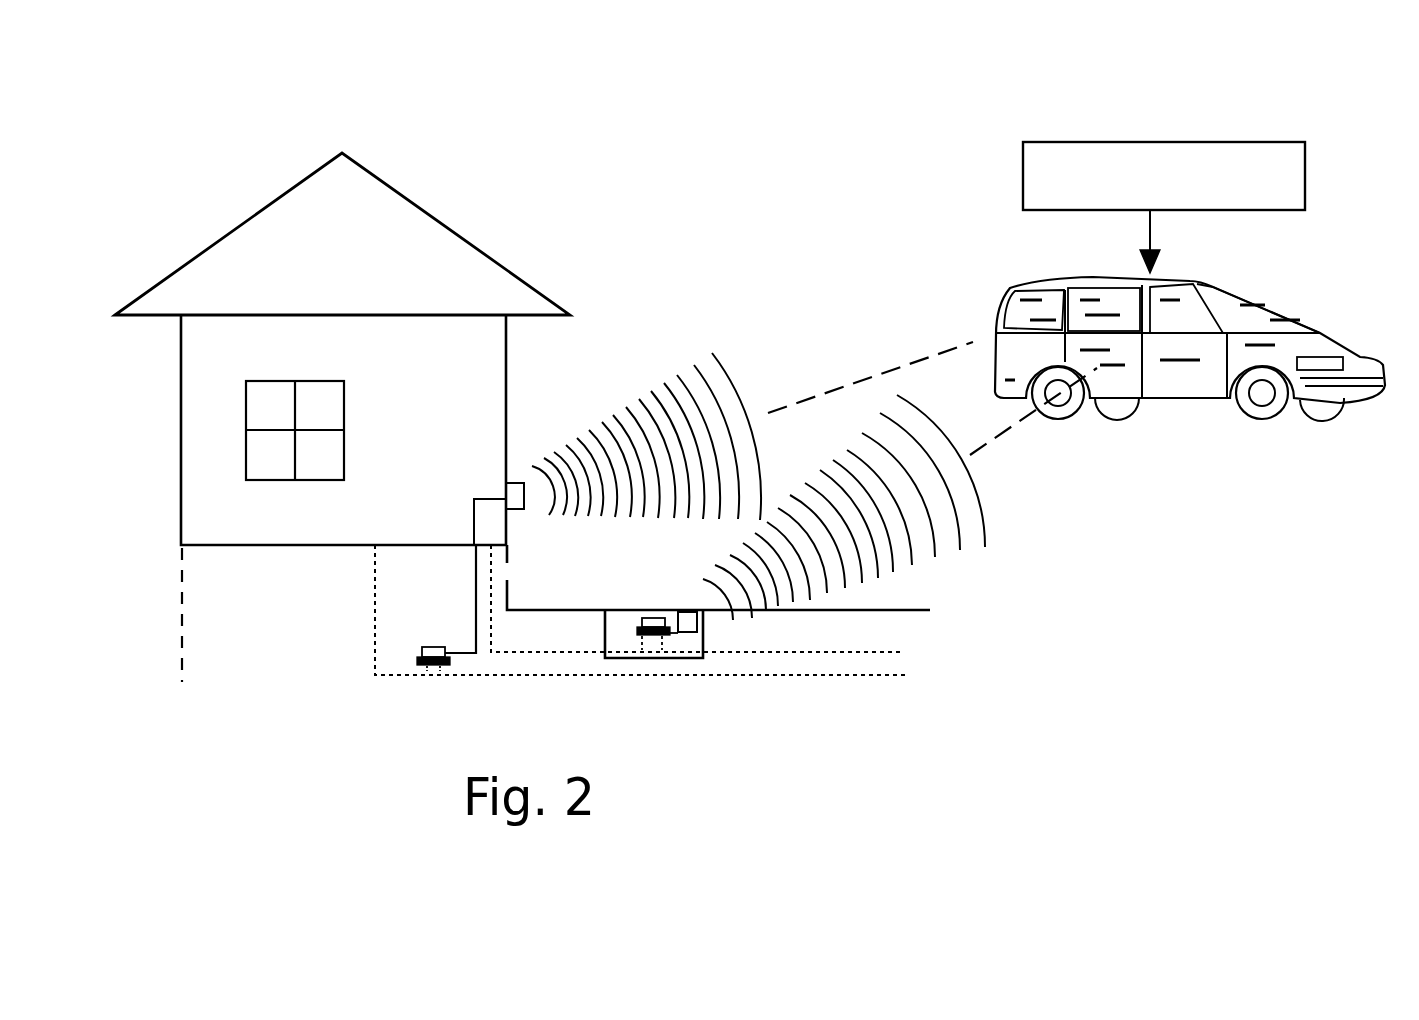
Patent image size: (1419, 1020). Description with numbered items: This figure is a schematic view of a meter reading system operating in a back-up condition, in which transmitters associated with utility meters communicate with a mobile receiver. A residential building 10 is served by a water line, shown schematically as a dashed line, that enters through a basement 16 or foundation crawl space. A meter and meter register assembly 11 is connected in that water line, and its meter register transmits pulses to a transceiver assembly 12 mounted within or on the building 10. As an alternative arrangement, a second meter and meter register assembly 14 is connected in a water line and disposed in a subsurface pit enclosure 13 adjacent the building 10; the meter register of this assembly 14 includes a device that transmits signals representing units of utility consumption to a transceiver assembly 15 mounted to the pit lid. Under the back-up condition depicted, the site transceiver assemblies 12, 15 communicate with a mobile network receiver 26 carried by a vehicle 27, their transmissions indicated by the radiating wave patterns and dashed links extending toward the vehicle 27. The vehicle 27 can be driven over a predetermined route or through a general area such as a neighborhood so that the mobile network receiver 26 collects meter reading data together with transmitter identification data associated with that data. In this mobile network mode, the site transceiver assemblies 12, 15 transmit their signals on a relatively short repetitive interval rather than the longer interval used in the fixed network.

The residential building 10 is at (181, 462).
The meter and meter register assembly 11 is at (432, 667).
The transceiver assembly 12 is at (525, 507).
The subsurface pit enclosure 13 is at (703, 637).
The meter and meter register assembly 14 is at (652, 640).
The transceiver assembly 15 is at (685, 612).
The basement 16 is at (278, 655).
The mobile network receiver 26 is at (1307, 185).
The vehicle 27 is at (1343, 337).